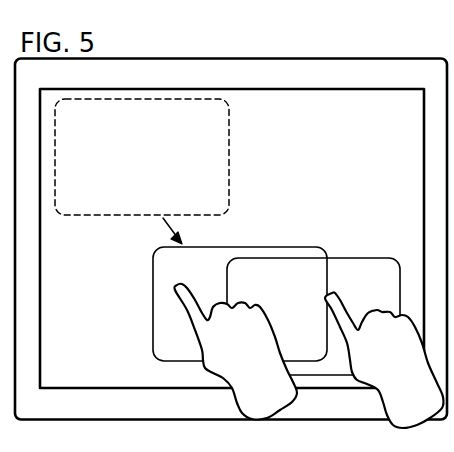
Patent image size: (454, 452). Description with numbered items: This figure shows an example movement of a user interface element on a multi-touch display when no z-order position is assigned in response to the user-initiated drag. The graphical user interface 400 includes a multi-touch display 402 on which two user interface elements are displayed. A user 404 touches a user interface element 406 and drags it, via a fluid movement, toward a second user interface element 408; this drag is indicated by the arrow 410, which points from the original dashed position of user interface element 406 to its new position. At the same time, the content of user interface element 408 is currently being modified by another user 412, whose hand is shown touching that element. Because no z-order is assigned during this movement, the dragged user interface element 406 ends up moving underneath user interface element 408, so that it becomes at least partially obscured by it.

The graphical user interface 400 is at (222, 49).
The multi-touch display 402 is at (65, 89).
The user 404 is at (253, 360).
The user interface element 406 is at (229, 125).
The user interface element 408 is at (350, 258).
The arrow 410 is at (164, 221).
The another user 412 is at (403, 370).